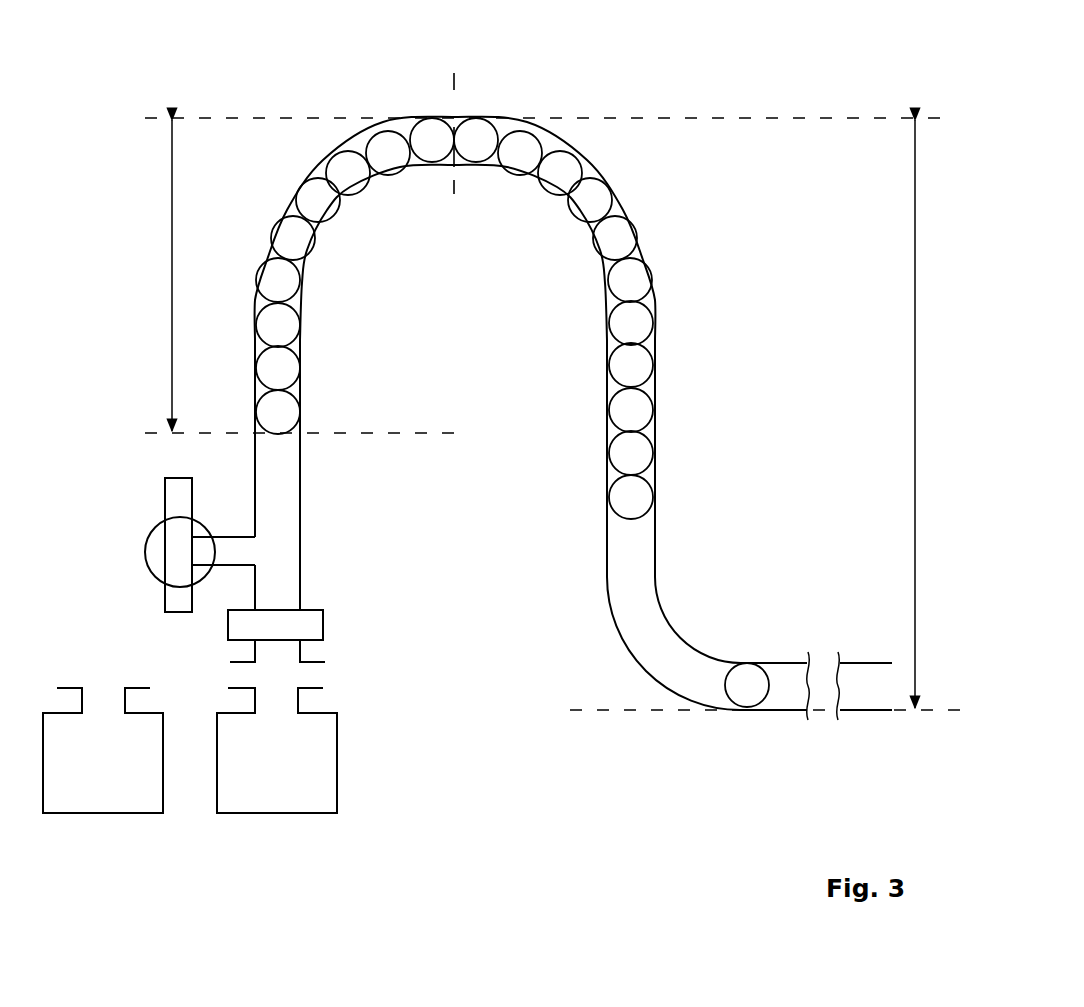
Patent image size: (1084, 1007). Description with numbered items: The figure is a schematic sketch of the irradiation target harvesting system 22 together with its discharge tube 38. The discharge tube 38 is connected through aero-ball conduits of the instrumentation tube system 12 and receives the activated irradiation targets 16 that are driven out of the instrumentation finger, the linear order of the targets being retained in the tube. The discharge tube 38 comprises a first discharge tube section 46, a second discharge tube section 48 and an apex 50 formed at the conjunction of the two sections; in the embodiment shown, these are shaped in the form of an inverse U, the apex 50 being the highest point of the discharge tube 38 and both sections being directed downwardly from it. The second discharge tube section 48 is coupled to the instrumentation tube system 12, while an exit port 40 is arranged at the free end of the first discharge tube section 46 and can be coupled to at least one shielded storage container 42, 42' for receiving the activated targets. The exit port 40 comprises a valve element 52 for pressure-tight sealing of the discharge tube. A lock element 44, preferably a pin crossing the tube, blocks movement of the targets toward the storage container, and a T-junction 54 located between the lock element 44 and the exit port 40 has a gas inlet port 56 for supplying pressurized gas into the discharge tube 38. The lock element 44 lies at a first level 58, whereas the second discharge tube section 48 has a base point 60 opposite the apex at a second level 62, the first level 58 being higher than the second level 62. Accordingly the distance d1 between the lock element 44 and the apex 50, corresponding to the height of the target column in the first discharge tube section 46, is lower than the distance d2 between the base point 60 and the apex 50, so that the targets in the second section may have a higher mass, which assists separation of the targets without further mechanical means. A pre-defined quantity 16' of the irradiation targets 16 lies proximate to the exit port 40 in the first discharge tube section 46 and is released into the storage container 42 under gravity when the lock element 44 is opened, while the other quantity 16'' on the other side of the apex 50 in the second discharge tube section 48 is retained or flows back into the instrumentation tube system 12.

The instrumentation tube system 12 is at (850, 663).
The irradiation targets 16 is at (419, 303).
The pre-defined quantity of activated irradiation targets 16' is at (355, 276).
The other quantity of activated irradiation targets 16'' is at (553, 318).
The irradiation target harvesting system 22 is at (188, 198).
The discharge tube 38 is at (656, 244).
The exit port 40 is at (237, 660).
The storage container 42 is at (277, 784).
The storage container 42' is at (103, 784).
The lock element 44 is at (303, 433).
The first discharge tube section 46 is at (262, 300).
The second discharge tube section 48 is at (648, 388).
The apex 50 is at (454, 113).
The valve element 52 is at (312, 618).
The T-junction 54 is at (173, 545).
The gas inlet port 56 is at (178, 502).
The first level 58 is at (424, 426).
The base point 60 is at (748, 708).
The second level 62 is at (573, 710).
The distance between lock element and apex d1 is at (154, 275).
The distance between base point and apex d2 is at (938, 414).